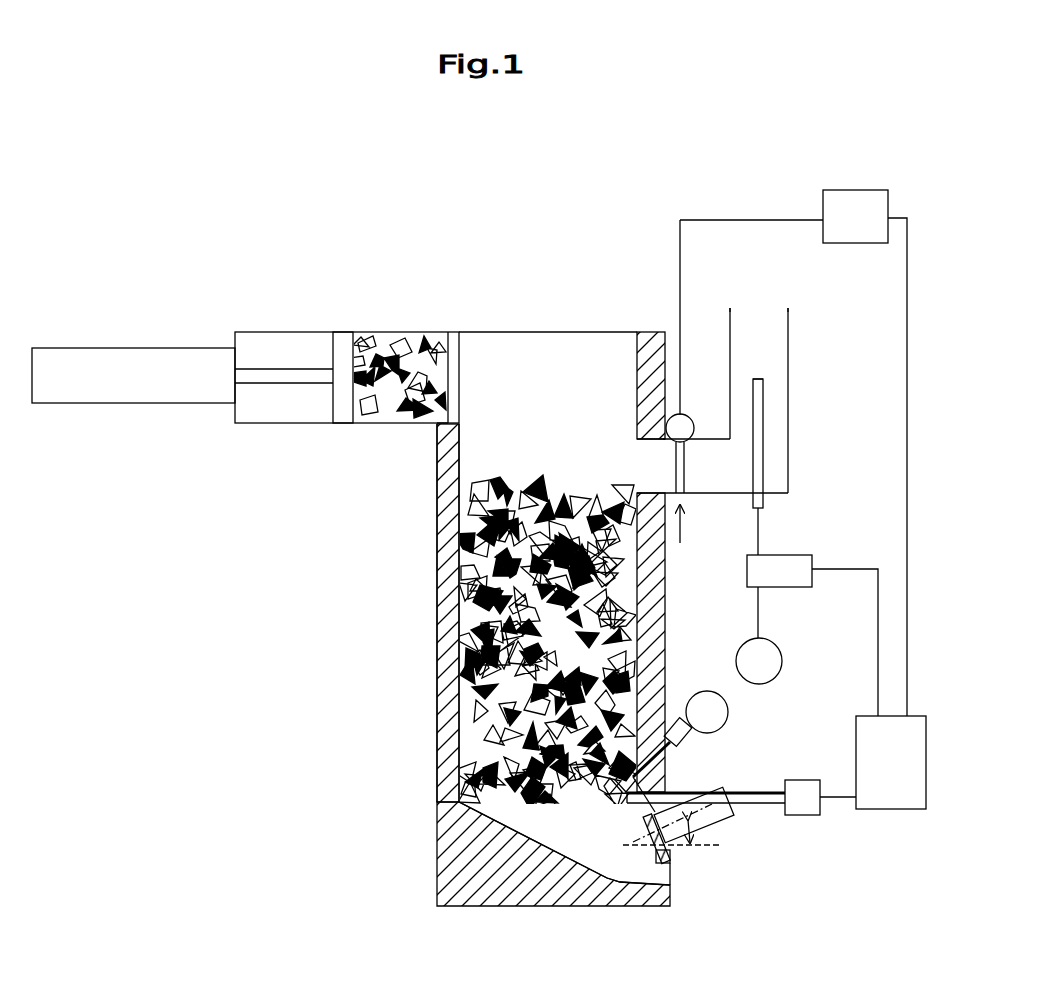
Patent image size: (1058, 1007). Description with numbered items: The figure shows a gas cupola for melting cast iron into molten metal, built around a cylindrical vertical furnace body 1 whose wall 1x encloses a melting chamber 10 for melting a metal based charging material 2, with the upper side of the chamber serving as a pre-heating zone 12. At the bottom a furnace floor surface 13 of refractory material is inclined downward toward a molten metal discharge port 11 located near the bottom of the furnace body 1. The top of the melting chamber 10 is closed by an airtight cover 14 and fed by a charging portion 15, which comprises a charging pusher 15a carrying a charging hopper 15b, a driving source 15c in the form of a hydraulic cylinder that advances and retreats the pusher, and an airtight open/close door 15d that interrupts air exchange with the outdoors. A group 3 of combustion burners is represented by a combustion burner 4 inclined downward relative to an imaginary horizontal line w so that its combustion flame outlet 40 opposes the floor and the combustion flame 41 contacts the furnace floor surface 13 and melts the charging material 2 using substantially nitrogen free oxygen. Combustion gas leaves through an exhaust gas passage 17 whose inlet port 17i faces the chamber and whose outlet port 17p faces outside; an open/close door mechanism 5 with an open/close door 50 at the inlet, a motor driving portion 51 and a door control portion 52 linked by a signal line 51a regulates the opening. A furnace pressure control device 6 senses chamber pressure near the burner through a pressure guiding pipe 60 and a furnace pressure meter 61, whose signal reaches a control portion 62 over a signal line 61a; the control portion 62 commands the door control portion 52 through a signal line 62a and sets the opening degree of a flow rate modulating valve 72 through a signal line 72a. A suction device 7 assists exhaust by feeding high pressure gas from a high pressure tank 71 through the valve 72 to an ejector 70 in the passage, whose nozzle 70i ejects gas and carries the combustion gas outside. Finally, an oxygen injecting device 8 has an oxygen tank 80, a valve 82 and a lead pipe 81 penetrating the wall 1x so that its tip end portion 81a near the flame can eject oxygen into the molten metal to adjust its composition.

The furnace body 1 is at (531, 628).
The wall of the furnace body 1x is at (437, 630).
The charging material 2 is at (523, 487).
The group of combustion burners 3 is at (734, 841).
The combustion burner 4 is at (720, 823).
The open/close door mechanism 5 is at (680, 510).
The furnace pressure control device 6 is at (898, 837).
The suction device 7 is at (777, 573).
The oxygen injecting device 8 is at (754, 712).
The melting chamber 10 is at (480, 708).
The molten metal discharge port 11 is at (693, 870).
The pre-heating zone 12 is at (477, 657).
The furnace floor surface 13 is at (567, 848).
The airtight cover 14 is at (537, 333).
The charging portion 15 is at (245, 366).
The charging pusher 15a is at (287, 377).
The charging hopper 15b is at (342, 330).
The driving source 15c is at (180, 390).
The airtight open/close door 15d is at (433, 423).
The exhaust gas passage 17 is at (761, 367).
The inlet port 17i is at (643, 477).
The outlet port 17p is at (762, 310).
The combustion flame outlet 40 is at (652, 855).
The combustion flame 41 is at (615, 860).
The open/close door 50 is at (690, 493).
The driving portion 51 is at (683, 422).
The signal line 51a is at (755, 218).
The door control portion 52 is at (853, 233).
The pressure guiding pipe 60 is at (760, 803).
The furnace pressure meter 61 is at (798, 783).
The signal line 61a is at (837, 800).
The control portion 62 is at (897, 800).
The signal line 62a is at (907, 453).
The ejector 70 is at (803, 452).
The nozzle 70i is at (763, 380).
The high pressure tank 71 is at (752, 653).
The flow rate modulating valve 72 is at (794, 599).
The signal line 72a is at (873, 712).
The oxygen tank 80 is at (717, 712).
The lead pipe 81 is at (653, 730).
The tip end portion 81a is at (660, 773).
The valve 82 is at (690, 738).
The imaginary horizontal line w is at (697, 857).